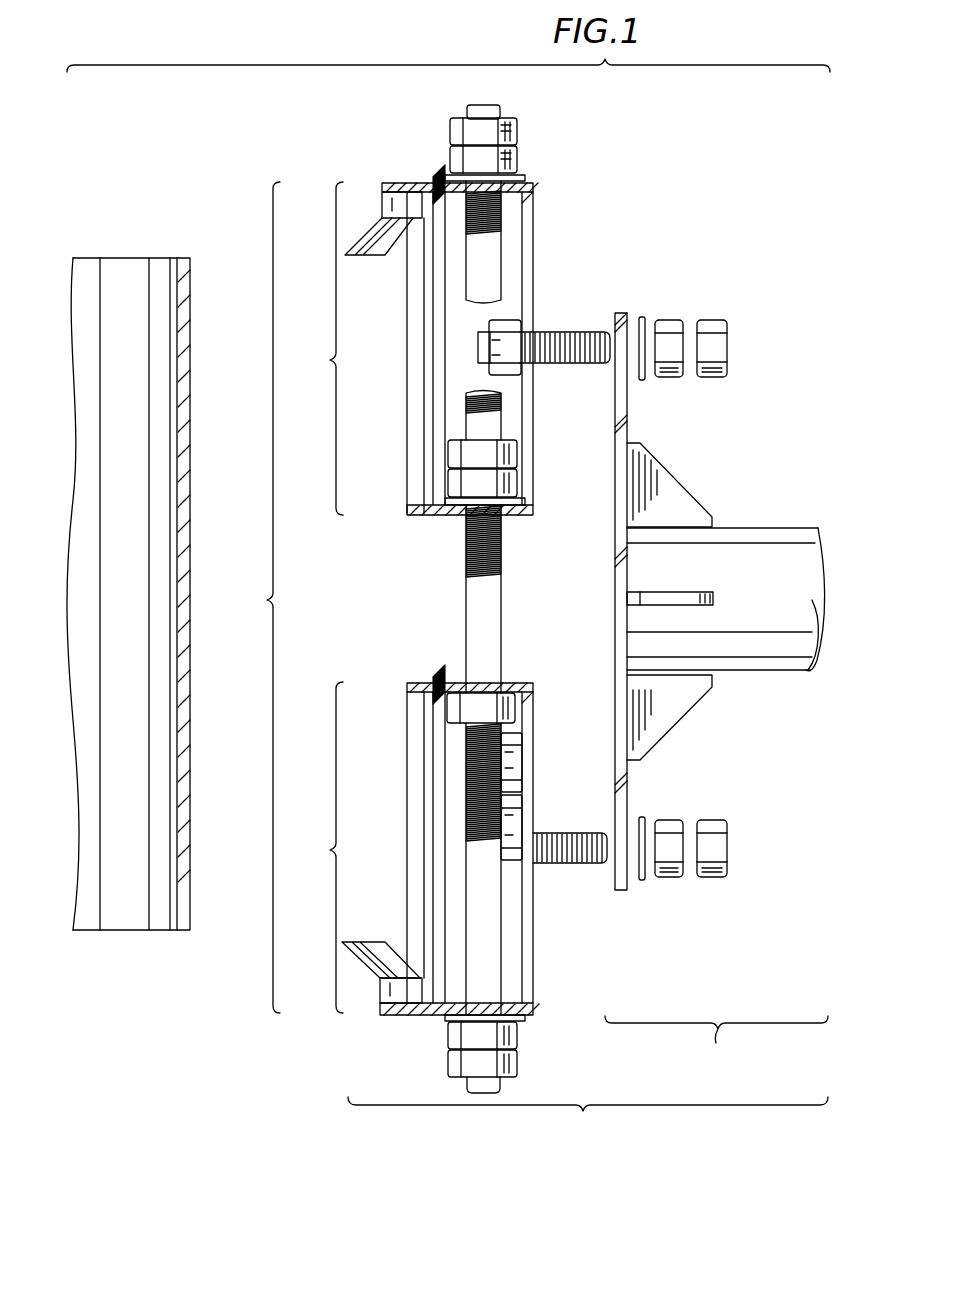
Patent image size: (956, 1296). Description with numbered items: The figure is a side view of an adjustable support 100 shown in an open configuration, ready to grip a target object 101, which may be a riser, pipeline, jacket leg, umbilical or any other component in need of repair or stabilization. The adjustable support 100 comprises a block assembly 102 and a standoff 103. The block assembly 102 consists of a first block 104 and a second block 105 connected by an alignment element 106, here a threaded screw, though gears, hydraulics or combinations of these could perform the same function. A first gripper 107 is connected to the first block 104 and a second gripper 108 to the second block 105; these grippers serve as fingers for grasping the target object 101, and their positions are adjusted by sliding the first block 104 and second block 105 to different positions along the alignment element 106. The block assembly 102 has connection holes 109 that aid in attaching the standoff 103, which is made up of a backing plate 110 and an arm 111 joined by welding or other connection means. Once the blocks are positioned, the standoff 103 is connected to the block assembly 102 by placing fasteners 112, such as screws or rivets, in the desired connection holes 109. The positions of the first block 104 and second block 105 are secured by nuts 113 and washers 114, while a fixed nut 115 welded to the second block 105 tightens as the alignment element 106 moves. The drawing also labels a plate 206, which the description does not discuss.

The adjustable support 100 is at (448, 602).
The target object 101 is at (128, 912).
The block assembly 102 is at (266, 600).
The standoff 103 is at (716, 1044).
The first block 104 is at (329, 360).
The second block 105 is at (329, 852).
The alignment element 106 is at (467, 108).
The first gripper 107 is at (390, 253).
The second gripper 108 is at (385, 937).
The connection holes 109 is at (528, 348).
The backing plate 110 is at (627, 790).
The arm 111 is at (777, 660).
The fasteners 112 is at (568, 320).
The nuts 113 is at (517, 163).
The washers 114 is at (525, 178).
The fixed nut 115 is at (490, 710).
The mounting plate 206 is at (623, 398).